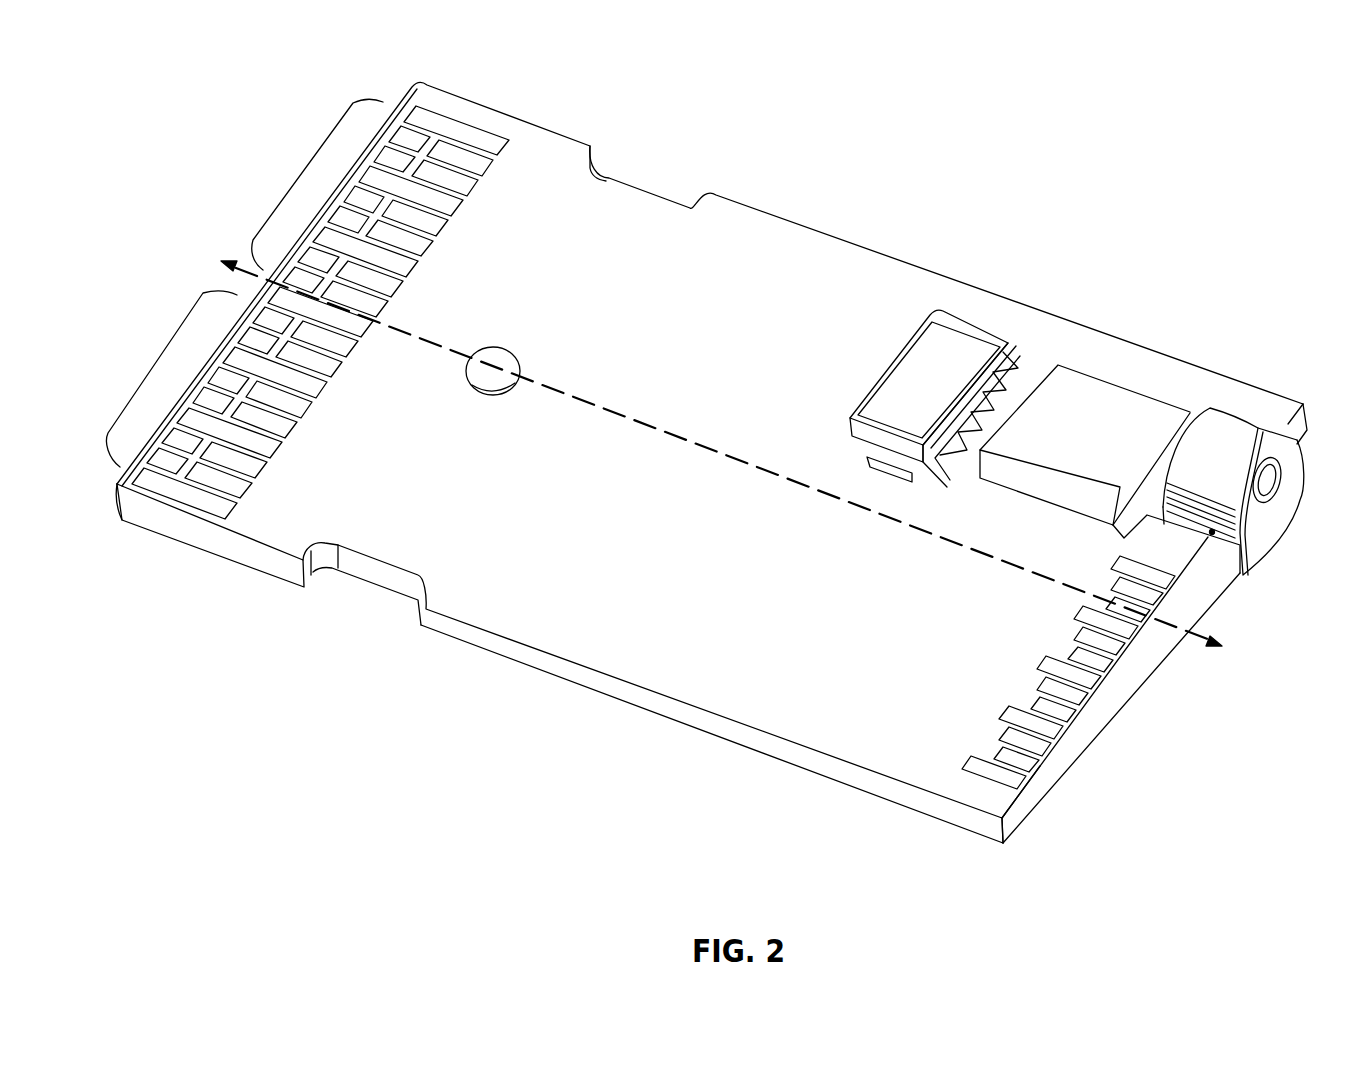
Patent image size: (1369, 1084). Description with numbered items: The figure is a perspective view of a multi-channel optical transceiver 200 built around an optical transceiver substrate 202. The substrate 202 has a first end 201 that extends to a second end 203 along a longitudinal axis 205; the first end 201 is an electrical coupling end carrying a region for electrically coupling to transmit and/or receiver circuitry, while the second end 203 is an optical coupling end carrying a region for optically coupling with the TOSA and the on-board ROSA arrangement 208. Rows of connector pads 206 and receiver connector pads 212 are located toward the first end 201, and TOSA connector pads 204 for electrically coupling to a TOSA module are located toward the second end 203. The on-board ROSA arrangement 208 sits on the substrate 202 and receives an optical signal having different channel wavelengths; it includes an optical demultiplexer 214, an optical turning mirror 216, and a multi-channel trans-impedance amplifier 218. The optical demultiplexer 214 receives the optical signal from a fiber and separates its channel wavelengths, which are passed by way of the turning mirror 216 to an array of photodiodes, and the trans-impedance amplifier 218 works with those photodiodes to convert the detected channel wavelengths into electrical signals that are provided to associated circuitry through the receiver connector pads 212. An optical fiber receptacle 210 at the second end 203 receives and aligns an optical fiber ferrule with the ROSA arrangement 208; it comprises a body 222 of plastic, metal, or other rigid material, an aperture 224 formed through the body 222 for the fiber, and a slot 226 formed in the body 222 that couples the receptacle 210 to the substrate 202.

The optical transceiver 200 is at (775, 102).
The first end 201 is at (120, 475).
The optical transceiver substrate 202 is at (812, 228).
The second end 203 is at (1012, 843).
The TOSA connector pads 204 is at (1053, 747).
The longitudinal axis 205 is at (1222, 658).
The connector pads 206 is at (155, 367).
The on-board ROSA arrangement 208 is at (918, 497).
The optical fiber receptacle 210 is at (1242, 443).
The receiver connector pads 212 is at (300, 170).
The optical demultiplexer 214 is at (1072, 390).
The optical turning mirror 216 is at (1005, 367).
The multi-channel trans-impedance amplifier 218 is at (938, 337).
The body 222 is at (1218, 454).
The aperture 224 is at (1270, 493).
The slot 226 is at (1210, 530).